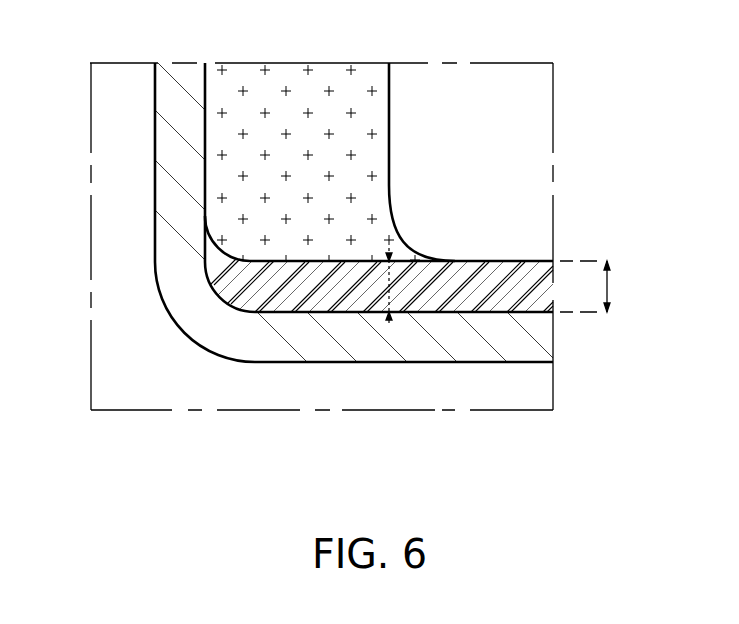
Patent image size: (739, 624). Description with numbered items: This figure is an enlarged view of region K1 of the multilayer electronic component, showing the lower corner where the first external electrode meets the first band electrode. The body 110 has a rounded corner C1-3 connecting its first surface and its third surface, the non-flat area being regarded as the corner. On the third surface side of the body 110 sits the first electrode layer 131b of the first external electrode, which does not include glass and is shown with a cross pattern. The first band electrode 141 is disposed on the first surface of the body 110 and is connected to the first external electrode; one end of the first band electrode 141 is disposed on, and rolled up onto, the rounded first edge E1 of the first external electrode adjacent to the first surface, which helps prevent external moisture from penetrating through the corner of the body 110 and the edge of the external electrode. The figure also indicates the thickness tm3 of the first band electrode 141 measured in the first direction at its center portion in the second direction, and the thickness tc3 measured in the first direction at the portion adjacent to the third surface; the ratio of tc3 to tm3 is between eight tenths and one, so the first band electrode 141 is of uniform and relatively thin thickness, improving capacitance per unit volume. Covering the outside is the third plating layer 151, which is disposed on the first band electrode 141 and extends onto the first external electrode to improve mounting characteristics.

The body 110 is at (508, 83).
The third plating layer 151 is at (182, 80).
The first band electrode 141 is at (500, 300).
The first electrode layer 131b is at (335, 82).
The first edge E1 is at (222, 243).
The 1-3th corner C1-3 is at (399, 236).
The thickness at portion adjacent to third surface tc3 is at (390, 288).
The thickness at center portion tm3 is at (606, 286).
The region K1 is at (340, 495).